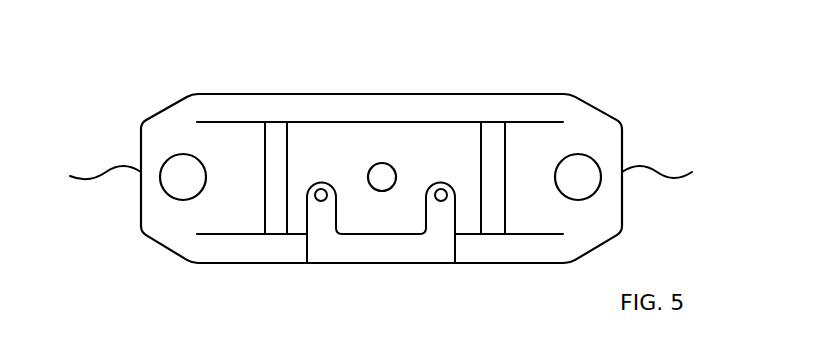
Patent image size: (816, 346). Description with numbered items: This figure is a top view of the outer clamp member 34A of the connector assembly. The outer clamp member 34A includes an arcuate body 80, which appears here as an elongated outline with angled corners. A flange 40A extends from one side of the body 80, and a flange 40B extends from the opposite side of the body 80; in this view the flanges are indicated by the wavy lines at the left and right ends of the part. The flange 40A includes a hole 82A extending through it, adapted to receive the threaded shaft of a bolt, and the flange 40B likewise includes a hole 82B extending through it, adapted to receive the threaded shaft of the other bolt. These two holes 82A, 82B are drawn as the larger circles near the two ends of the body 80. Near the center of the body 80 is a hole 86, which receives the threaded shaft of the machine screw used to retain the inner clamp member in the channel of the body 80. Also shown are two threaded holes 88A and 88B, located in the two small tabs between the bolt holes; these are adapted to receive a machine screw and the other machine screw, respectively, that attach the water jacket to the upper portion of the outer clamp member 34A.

The outer clamp member 34A is at (654, 48).
The arcuate body 80 is at (557, 94).
The hole 82A is at (578, 176).
The hole 82B is at (183, 176).
The hole 86 is at (382, 176).
The threaded hole 88A is at (441, 186).
The threaded hole 88B is at (321, 186).
The flange 40A is at (679, 174).
The flange 40B is at (82, 176).